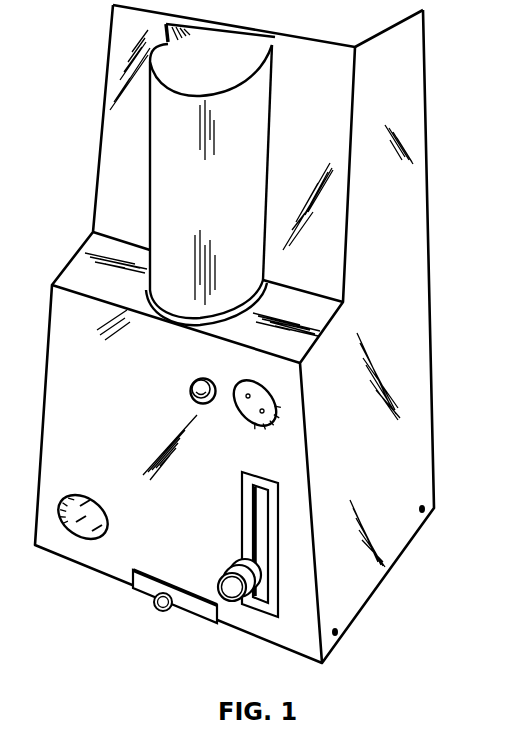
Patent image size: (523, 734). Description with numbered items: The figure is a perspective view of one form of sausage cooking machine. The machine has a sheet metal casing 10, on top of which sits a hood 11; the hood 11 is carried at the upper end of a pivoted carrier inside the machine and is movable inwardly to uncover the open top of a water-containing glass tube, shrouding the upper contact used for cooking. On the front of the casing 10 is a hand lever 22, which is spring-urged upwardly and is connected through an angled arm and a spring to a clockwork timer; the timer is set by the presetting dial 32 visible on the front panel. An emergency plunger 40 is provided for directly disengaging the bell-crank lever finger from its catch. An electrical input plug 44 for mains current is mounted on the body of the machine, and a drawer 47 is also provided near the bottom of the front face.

The housing 10 is at (416, 103).
The cylindrical container 11 is at (158, 182).
The control knob 22 is at (233, 592).
The indicator dial 32 is at (250, 418).
The push button 40 is at (206, 386).
The selector dial 44 is at (95, 512).
The slide bar 47 is at (192, 607).